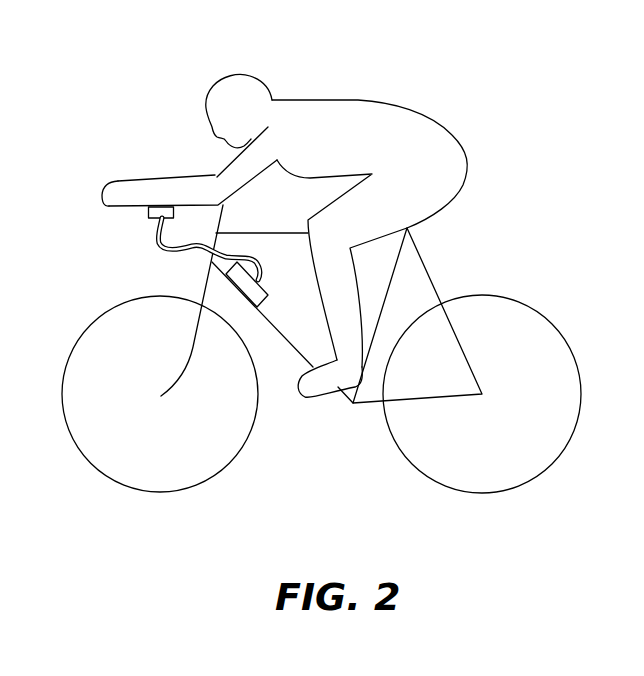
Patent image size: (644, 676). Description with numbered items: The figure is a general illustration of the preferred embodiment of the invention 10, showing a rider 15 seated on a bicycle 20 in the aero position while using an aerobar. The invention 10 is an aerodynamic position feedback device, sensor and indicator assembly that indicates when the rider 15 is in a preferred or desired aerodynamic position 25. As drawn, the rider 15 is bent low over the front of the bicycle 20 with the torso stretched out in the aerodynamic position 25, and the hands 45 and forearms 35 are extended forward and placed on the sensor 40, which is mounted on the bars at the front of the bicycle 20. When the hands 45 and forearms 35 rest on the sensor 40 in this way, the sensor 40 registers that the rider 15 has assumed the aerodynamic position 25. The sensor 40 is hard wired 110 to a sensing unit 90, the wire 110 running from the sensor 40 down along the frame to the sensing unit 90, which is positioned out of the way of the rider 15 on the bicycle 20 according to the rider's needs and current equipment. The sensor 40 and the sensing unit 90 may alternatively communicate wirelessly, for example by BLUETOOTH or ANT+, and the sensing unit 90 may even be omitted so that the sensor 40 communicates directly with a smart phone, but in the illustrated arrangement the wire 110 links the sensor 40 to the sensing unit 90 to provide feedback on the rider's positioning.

The invention 10 is at (470, 49).
The rider 15 is at (238, 78).
The bicycle 20 is at (531, 305).
The aerodynamic position 25 is at (359, 112).
The forearms 35 is at (170, 177).
The sensor 40 is at (148, 212).
The hands 45 is at (100, 200).
The sensing unit 90 is at (262, 305).
The hard wire 110 is at (183, 256).